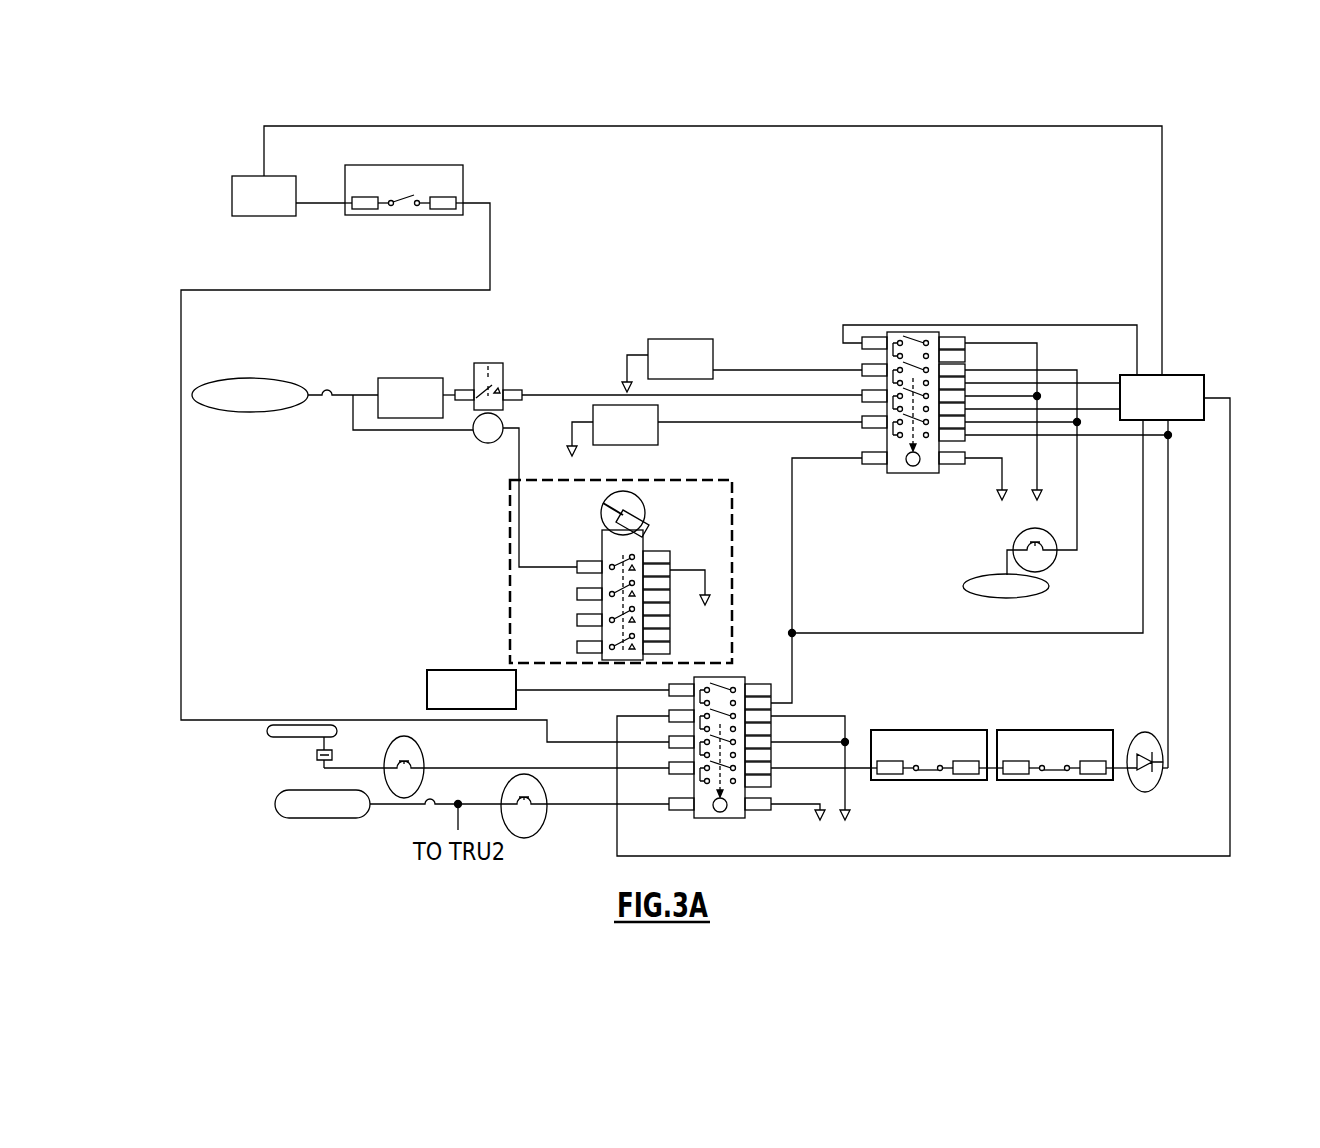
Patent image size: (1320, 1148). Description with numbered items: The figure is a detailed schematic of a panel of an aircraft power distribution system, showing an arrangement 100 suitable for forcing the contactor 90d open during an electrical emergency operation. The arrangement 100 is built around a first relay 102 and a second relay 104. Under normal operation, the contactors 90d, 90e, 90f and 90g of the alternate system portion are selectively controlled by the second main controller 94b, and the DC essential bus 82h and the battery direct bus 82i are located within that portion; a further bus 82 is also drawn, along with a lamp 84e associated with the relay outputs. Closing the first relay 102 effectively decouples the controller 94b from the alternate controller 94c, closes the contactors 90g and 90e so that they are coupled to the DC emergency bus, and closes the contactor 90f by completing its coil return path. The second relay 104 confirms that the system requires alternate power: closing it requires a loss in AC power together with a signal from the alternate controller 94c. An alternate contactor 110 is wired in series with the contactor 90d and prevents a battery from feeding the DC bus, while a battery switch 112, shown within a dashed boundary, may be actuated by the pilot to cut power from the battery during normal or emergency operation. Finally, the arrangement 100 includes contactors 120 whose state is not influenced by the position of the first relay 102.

The arrangement 100 is at (985, 152).
The alternate contactor 110 is at (463, 180).
The contactor 90d is at (248, 216).
The battery direct bus 82i is at (258, 378).
The contactor 90f is at (426, 378).
The contactor 90g is at (696, 339).
The contactor 90e is at (658, 436).
The first relay 102 is at (970, 345).
The second main controller 94b is at (1186, 375).
The indicator lamp 84e is at (1049, 586).
The battery switch 112 is at (732, 490).
The alternate controller 94c is at (442, 670).
The second relay 104 is at (790, 716).
The contactors 120 is at (1005, 730).
The DC essential bus 82h is at (279, 737).
The power bus 82 is at (336, 818).